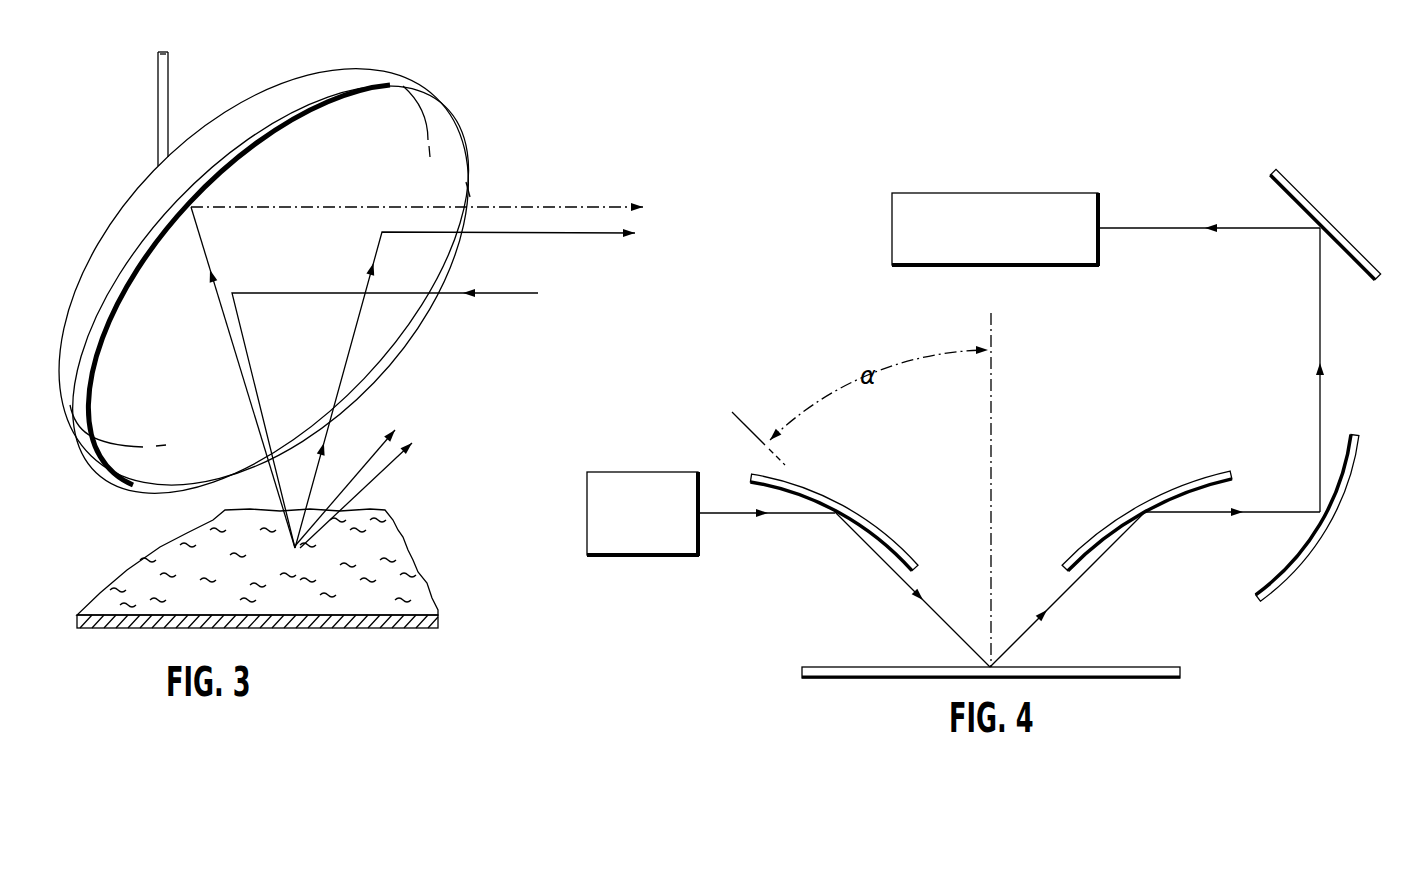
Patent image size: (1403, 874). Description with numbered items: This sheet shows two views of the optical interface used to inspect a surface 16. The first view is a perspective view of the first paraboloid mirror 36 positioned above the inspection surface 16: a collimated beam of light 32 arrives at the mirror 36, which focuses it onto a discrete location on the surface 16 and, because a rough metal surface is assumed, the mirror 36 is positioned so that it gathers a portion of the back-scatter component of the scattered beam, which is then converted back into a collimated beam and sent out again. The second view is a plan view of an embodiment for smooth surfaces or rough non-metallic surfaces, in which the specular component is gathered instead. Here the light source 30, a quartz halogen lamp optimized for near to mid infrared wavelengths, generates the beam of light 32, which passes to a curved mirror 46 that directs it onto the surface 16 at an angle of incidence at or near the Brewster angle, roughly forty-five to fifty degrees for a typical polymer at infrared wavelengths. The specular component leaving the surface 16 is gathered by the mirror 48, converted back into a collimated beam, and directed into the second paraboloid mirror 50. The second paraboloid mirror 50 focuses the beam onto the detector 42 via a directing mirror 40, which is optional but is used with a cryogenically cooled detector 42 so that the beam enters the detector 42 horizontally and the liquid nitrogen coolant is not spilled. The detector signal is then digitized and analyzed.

In FIG. 3, the surface 16 is at (373, 567).
In FIG. 4, the surface 16 is at (1073, 667).
In FIG. 4, the light source 30 is at (643, 475).
In FIG. 3, the beam of light 32 is at (498, 293).
In FIG. 4, the beam of light 32 is at (733, 514).
In FIG. 3, the first paraboloid mirror 36 is at (278, 108).
In FIG. 4, the directing mirror 40 is at (1298, 188).
In FIG. 4, the detector 42 is at (1013, 202).
In FIG. 4, the first curved mirror 46 is at (843, 508).
In FIG. 4, the mirror 48 is at (1147, 498).
In FIG. 4, the second paraboloid mirror 50 is at (1321, 522).